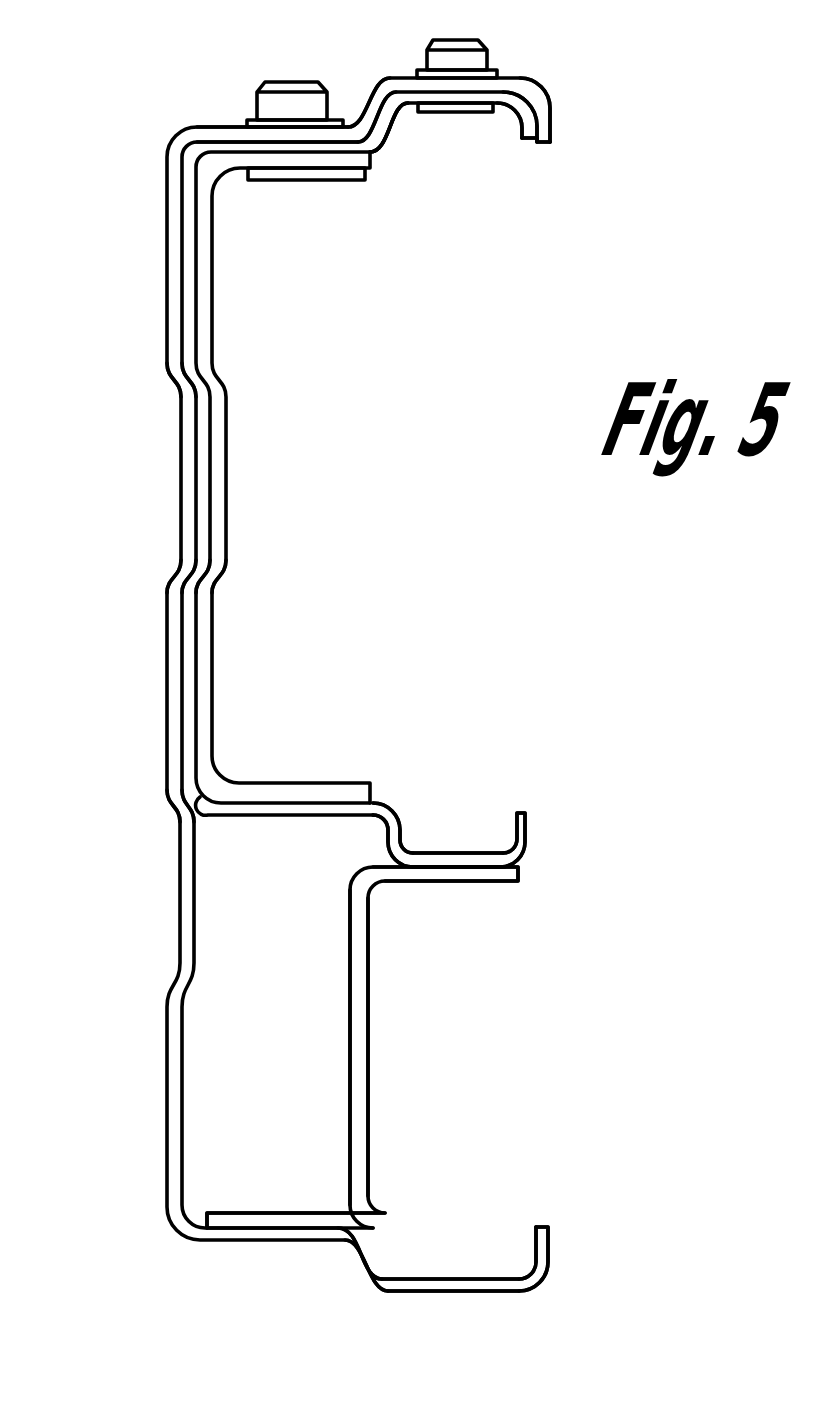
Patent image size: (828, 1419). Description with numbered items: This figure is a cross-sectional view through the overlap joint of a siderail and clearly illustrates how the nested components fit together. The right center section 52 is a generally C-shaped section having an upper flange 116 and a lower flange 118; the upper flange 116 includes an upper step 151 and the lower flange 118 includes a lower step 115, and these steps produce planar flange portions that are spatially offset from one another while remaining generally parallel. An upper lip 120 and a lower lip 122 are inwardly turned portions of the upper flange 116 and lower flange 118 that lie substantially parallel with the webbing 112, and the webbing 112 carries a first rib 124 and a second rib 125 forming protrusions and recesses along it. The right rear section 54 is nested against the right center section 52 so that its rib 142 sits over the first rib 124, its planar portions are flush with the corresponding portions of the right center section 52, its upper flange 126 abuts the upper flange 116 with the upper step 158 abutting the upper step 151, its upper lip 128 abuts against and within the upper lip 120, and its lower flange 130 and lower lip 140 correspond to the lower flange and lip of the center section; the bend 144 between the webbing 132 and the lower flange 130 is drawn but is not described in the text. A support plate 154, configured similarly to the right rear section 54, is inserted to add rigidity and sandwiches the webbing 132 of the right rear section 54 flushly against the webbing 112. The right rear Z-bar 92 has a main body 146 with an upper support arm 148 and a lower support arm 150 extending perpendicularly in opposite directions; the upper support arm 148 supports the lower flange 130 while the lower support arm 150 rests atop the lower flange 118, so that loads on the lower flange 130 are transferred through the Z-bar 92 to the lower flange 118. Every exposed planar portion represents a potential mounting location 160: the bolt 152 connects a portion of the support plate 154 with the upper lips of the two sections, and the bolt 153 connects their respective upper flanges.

The right center section 52 is at (163, 1100).
The right rear section 54 is at (535, 841).
The right rear Z-bar 92 is at (374, 1056).
The webbing 112 is at (168, 588).
The lower step 115 is at (352, 1252).
The upper flange 116 is at (238, 118).
The lower flange 118 is at (404, 1296).
The upper lip 120 is at (546, 122).
The lower lip 122 is at (553, 1251).
The first rib 124 is at (178, 412).
The second rib 125 is at (184, 840).
The upper flange 126 is at (392, 148).
The upper lip 128 is at (526, 146).
The lower flange 130 is at (462, 850).
The webbing 132 is at (192, 612).
The lower lip 140 is at (528, 818).
The rib 142 is at (206, 425).
The U-shaped bend 144 is at (386, 815).
The main body 146 is at (359, 977).
The upper support arm 148 is at (502, 886).
The lower support arm 150 is at (248, 1222).
The upper step 151 is at (357, 118).
The bolt 152 is at (283, 100).
The bolt 153 is at (470, 60).
The support plate 154 is at (219, 480).
The upper step 158 is at (400, 130).
The mounting location 160 is at (155, 214).